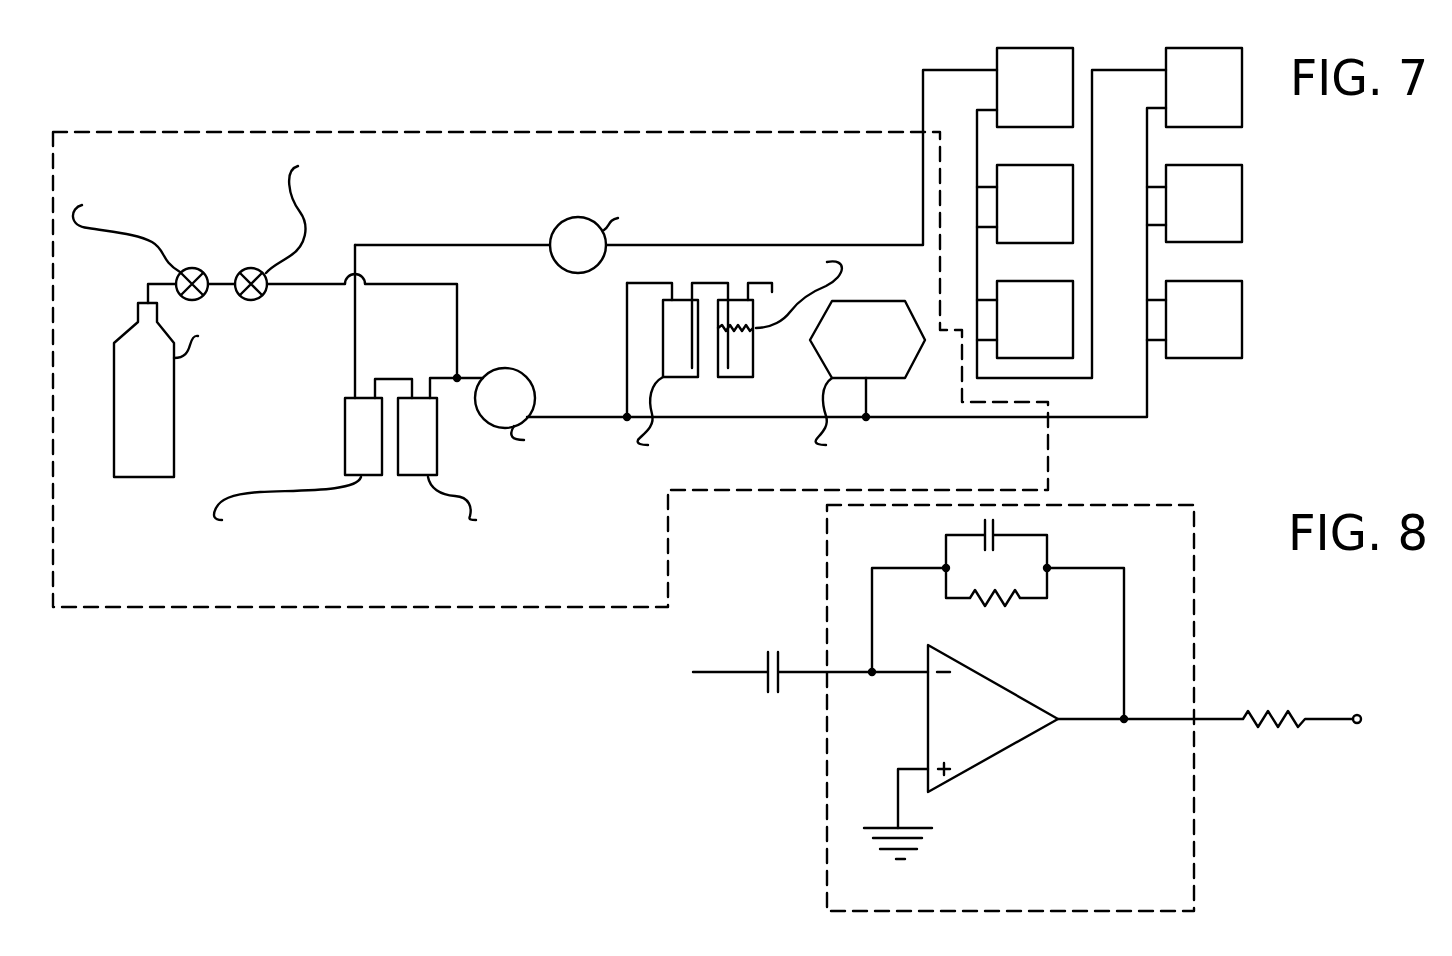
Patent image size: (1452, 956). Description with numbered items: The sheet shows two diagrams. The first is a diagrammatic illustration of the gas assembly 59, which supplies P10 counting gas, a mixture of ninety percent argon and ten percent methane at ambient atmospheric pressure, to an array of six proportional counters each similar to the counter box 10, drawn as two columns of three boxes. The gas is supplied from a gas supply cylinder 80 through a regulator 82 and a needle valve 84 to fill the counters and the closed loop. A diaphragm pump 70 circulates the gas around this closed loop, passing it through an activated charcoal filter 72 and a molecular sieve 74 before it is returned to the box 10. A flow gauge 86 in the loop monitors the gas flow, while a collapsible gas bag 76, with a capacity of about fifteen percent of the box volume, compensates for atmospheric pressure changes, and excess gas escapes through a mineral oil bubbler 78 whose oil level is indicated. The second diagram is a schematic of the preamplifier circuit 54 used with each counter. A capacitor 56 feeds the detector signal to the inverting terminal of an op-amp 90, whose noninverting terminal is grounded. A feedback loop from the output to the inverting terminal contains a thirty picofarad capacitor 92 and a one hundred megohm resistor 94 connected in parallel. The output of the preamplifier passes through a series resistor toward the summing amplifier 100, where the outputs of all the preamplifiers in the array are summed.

In FIG. 7, the box 10 is at (997, 95).
In FIG. 8, the preamplifier circuit 54 is at (1098, 505).
In FIG. 8, the capacitor 56 is at (763, 688).
In FIG. 7, the gas assembly 59 is at (660, 131).
In FIG. 7, the diaphragm pump 70 is at (527, 378).
In FIG. 7, the activated charcoal filter 72 is at (437, 448).
In FIG. 7, the molecular sieve 74 is at (345, 443).
In FIG. 7, the collapsible gas bag 76 is at (912, 360).
In FIG. 7, the mineral oil bubbler 78 is at (740, 377).
In FIG. 7, the gas supply cylinder 80 is at (174, 463).
In FIG. 7, the regulator 82 is at (198, 268).
In FIG. 7, the needle valve 84 is at (256, 268).
In FIG. 7, the flow gauge 86 is at (590, 218).
In FIG. 8, the op-amp 90 is at (1005, 690).
In FIG. 8, the capacitor 92 is at (1000, 530).
In FIG. 8, the resistor 94 is at (1012, 604).
In FIG. 8, the summing amplifier 100 is at (1300, 715).